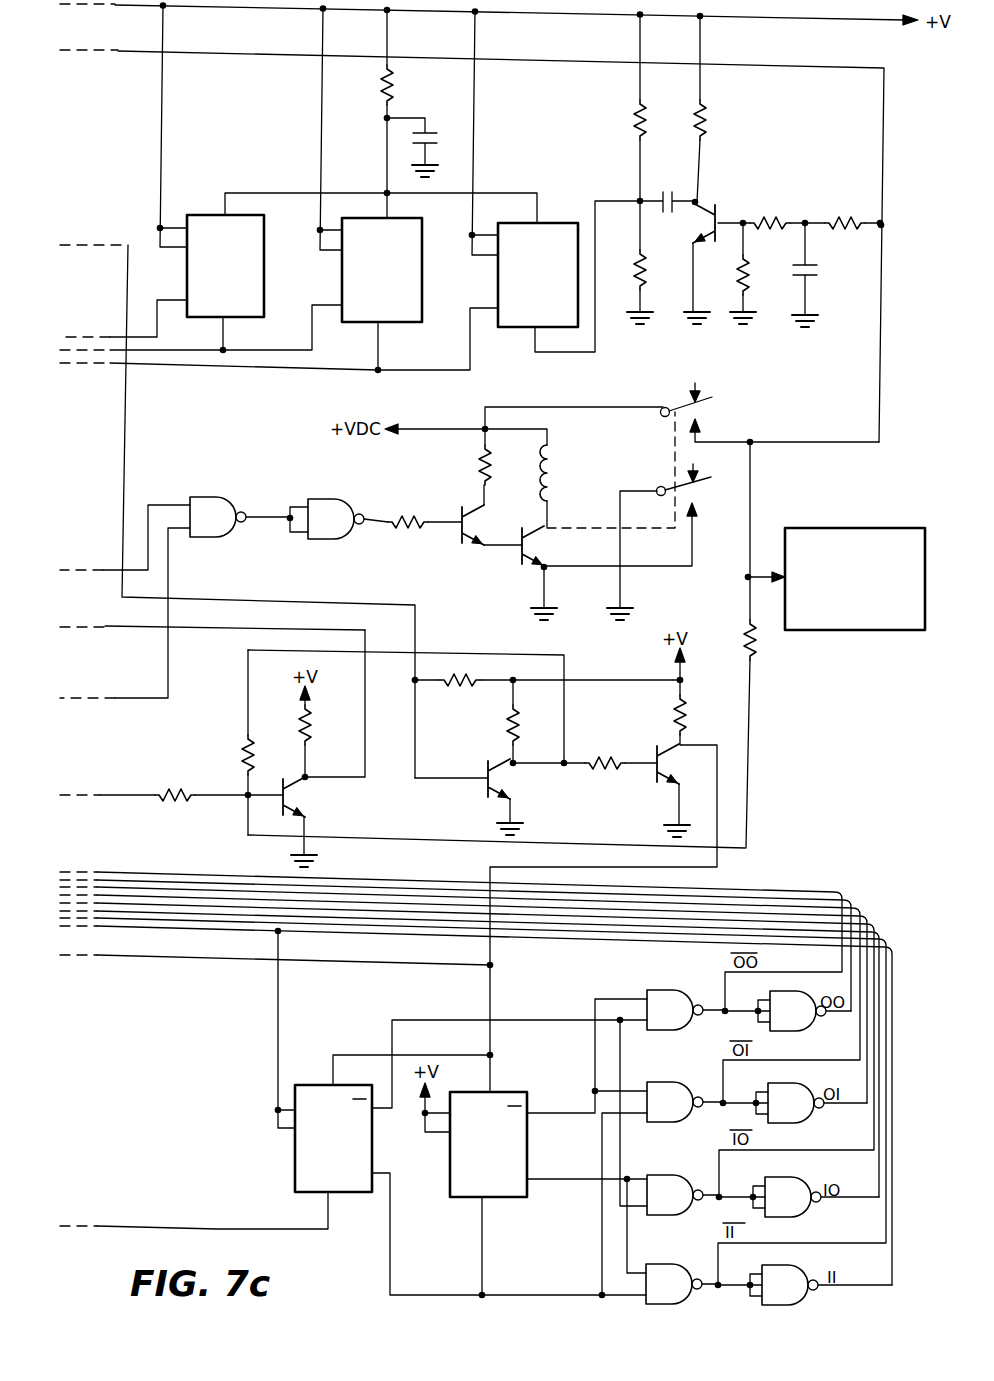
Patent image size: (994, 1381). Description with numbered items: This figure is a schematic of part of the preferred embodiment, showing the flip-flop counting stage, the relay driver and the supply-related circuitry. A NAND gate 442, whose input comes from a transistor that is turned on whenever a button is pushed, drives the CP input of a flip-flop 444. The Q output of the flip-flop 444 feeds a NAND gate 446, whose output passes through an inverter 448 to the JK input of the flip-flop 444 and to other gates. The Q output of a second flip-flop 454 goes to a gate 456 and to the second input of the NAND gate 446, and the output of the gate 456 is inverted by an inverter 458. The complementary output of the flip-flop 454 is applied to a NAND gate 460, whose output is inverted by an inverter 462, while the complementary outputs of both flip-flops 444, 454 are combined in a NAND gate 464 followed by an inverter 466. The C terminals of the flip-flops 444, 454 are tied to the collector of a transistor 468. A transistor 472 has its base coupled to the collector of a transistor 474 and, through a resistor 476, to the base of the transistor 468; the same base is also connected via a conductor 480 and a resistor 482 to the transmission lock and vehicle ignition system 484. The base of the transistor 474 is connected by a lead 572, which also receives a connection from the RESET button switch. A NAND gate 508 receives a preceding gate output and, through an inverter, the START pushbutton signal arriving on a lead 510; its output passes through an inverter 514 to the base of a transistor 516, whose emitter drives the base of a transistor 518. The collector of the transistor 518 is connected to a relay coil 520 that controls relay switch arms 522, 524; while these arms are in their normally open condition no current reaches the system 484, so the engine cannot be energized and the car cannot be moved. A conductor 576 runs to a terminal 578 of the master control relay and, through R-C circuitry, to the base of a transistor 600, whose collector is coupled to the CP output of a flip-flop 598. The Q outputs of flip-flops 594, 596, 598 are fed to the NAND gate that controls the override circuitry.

The conductor 576 is at (272, 57).
The flip-flop circuit 594 is at (258, 272).
The flip-flop circuit 596 is at (416, 272).
The flip-flop circuit 598 is at (553, 230).
The transistor 600 is at (712, 214).
The lead 572 is at (128, 433).
The NAND gate 508 is at (218, 505).
The inverter 514 is at (343, 507).
The transistor 516 is at (480, 508).
The transistor 518 is at (541, 538).
The relay coil 520 is at (556, 474).
The relay switch arm 522 is at (713, 401).
The relay switch arm 524 is at (698, 485).
The terminal of the master control relay 578 is at (699, 438).
The resistor 482 is at (753, 658).
The transmission lock and vehicle ignition system 484 is at (843, 630).
The lead 510 is at (113, 699).
The transistor 472 is at (298, 790).
The transistor 474 is at (505, 775).
The resistor 476 is at (596, 760).
The transistor 468 is at (685, 764).
The conductor 480 is at (385, 845).
The flip-flop circuit 444 is at (365, 1141).
The flip-flop circuit 454 is at (520, 1146).
The NAND gate 442 is at (218, 1228).
The NAND gate 464 is at (658, 999).
The NAND gate 460 is at (667, 1088).
The gate 456 is at (666, 1182).
The NAND gate 446 is at (660, 1270).
The inverter 466 is at (782, 1003).
The inverter 462 is at (776, 1093).
The inverter 458 is at (775, 1186).
The inverter 448 is at (797, 1295).